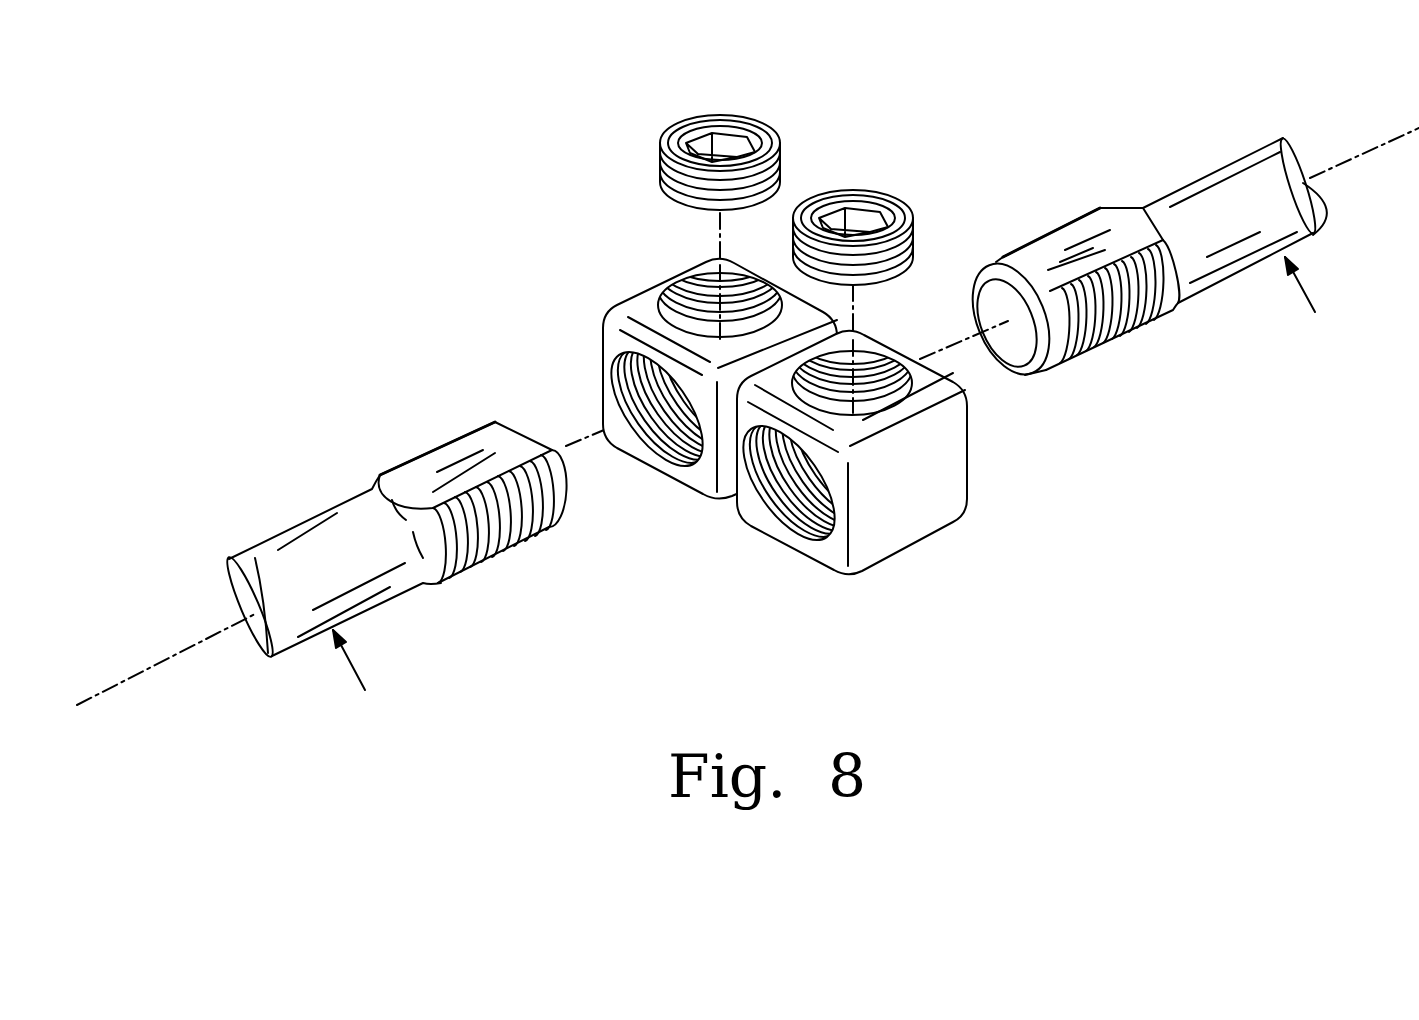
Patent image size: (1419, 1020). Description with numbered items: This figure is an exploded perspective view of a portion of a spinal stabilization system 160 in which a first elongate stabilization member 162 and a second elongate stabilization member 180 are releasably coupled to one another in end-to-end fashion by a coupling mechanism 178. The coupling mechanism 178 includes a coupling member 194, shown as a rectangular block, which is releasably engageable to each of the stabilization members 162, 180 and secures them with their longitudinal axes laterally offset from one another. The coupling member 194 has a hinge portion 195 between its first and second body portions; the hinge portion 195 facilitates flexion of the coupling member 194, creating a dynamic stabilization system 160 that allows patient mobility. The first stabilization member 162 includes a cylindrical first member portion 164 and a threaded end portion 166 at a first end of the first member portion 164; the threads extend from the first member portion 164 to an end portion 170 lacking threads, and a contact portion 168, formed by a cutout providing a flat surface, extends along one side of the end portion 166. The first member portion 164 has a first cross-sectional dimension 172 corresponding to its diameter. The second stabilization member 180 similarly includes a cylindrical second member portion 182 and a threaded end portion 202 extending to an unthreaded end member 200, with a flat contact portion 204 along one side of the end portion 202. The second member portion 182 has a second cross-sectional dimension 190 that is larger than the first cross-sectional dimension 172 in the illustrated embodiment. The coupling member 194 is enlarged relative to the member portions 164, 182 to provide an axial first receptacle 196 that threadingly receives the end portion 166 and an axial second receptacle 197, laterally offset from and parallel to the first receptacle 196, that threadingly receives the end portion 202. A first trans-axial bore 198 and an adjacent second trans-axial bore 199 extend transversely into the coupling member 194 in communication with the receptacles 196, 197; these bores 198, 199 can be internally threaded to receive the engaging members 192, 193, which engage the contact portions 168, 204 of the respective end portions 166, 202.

The spinal stabilization system 160 is at (1018, 518).
The first elongate stabilization member 162 is at (405, 546).
The first member portion 164 is at (340, 533).
The end portion 166 is at (487, 563).
The contact portion 168 is at (425, 473).
The end portion lacking threads 170 is at (549, 530).
The first cross-sectional dimension 172 is at (285, 530).
The coupling mechanism 178 is at (790, 185).
The second elongate stabilization member 180 is at (1142, 260).
The second member portion 182 is at (1185, 203).
The second cross-sectional dimension 190 is at (1238, 156).
The engaging member 192 is at (705, 146).
The engaging member 193 is at (869, 216).
The coupling member 194 is at (846, 486).
The hinge portion 195 is at (690, 392).
The first receptacle 196 is at (637, 392).
The second receptacle 197 is at (797, 508).
The first trans-axial bore 198 is at (686, 290).
The second trans-axial bore 199 is at (880, 377).
The end member 200 is at (1043, 368).
The end portion 202 is at (1103, 350).
The contact portion 204 is at (1057, 243).